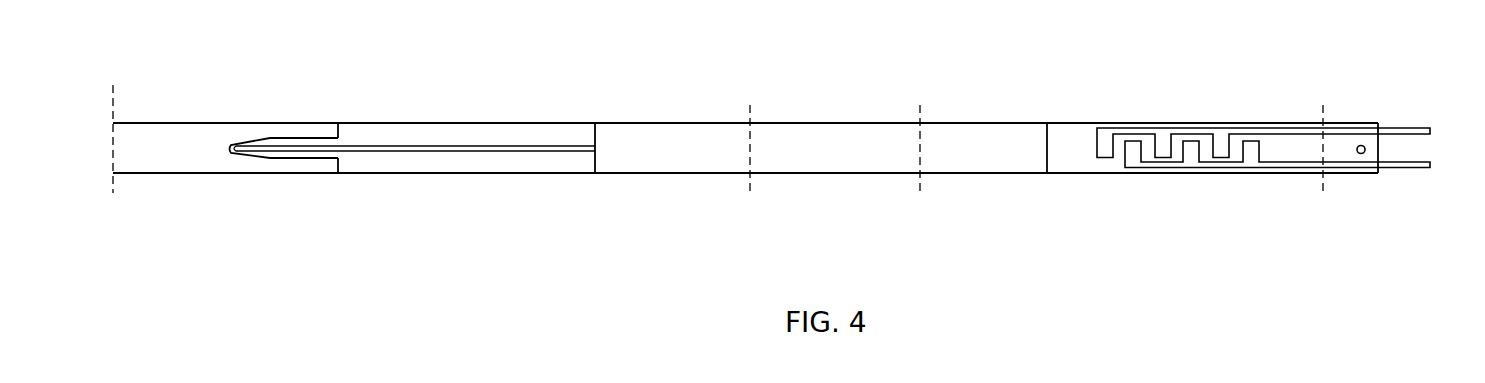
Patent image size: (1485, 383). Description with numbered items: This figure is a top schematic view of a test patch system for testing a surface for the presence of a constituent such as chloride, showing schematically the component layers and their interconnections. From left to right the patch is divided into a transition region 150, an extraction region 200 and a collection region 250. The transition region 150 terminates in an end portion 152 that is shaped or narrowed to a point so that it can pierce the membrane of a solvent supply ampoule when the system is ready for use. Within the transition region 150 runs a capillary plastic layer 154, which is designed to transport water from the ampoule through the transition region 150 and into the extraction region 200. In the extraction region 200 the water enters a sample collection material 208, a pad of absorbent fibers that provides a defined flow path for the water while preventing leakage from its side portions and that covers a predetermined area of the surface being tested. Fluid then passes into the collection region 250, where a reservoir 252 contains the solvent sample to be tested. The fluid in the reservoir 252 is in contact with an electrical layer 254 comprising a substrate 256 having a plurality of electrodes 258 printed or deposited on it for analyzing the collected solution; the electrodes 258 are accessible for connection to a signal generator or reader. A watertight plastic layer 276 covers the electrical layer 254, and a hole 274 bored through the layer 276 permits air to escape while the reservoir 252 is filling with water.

The transition region 150 is at (750, 87).
The end portion 152 is at (260, 138).
The capillary plastic layer 154 is at (353, 145).
The extraction region 200 is at (920, 87).
The sample collection material 208 is at (828, 167).
The collection region 250 is at (1322, 87).
The reservoir 252 is at (1102, 165).
The electrical layer 254 is at (1312, 142).
The substrate 256 is at (1285, 175).
The electrodes 258 is at (1412, 133).
The hole 274 is at (1366, 150).
The watertight plastic layer 276 is at (1330, 125).